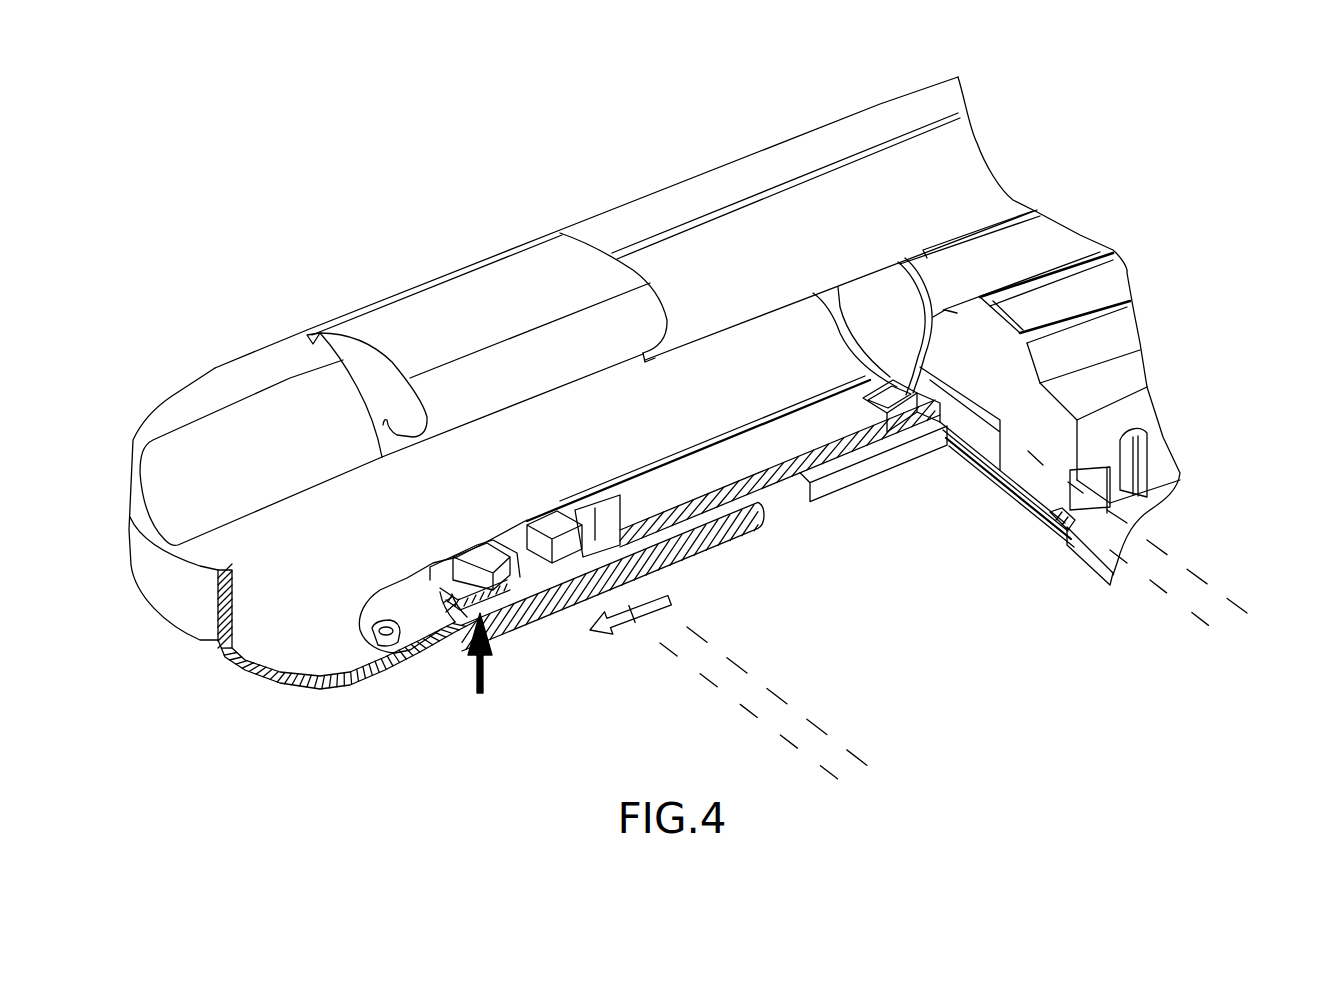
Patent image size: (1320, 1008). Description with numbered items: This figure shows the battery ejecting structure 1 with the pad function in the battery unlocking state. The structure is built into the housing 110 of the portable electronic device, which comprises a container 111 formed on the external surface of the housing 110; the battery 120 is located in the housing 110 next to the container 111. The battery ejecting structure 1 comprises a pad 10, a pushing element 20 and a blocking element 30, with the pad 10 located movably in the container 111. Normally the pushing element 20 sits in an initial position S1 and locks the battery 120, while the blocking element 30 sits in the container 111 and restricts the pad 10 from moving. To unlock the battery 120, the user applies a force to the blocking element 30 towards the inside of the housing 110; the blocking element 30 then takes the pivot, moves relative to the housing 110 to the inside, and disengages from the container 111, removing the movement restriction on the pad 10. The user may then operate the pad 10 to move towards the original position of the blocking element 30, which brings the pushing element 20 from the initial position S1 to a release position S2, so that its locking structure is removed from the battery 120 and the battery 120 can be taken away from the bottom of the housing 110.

The battery ejecting structure 1 is at (786, 352).
The pad 10 is at (704, 553).
The pushing element 20 is at (713, 467).
The blocking element 30 is at (460, 547).
The housing 110 is at (893, 467).
The container 111 is at (787, 507).
The battery 120 is at (1113, 337).
The initial position S1 is at (982, 665).
The release position S2 is at (953, 697).